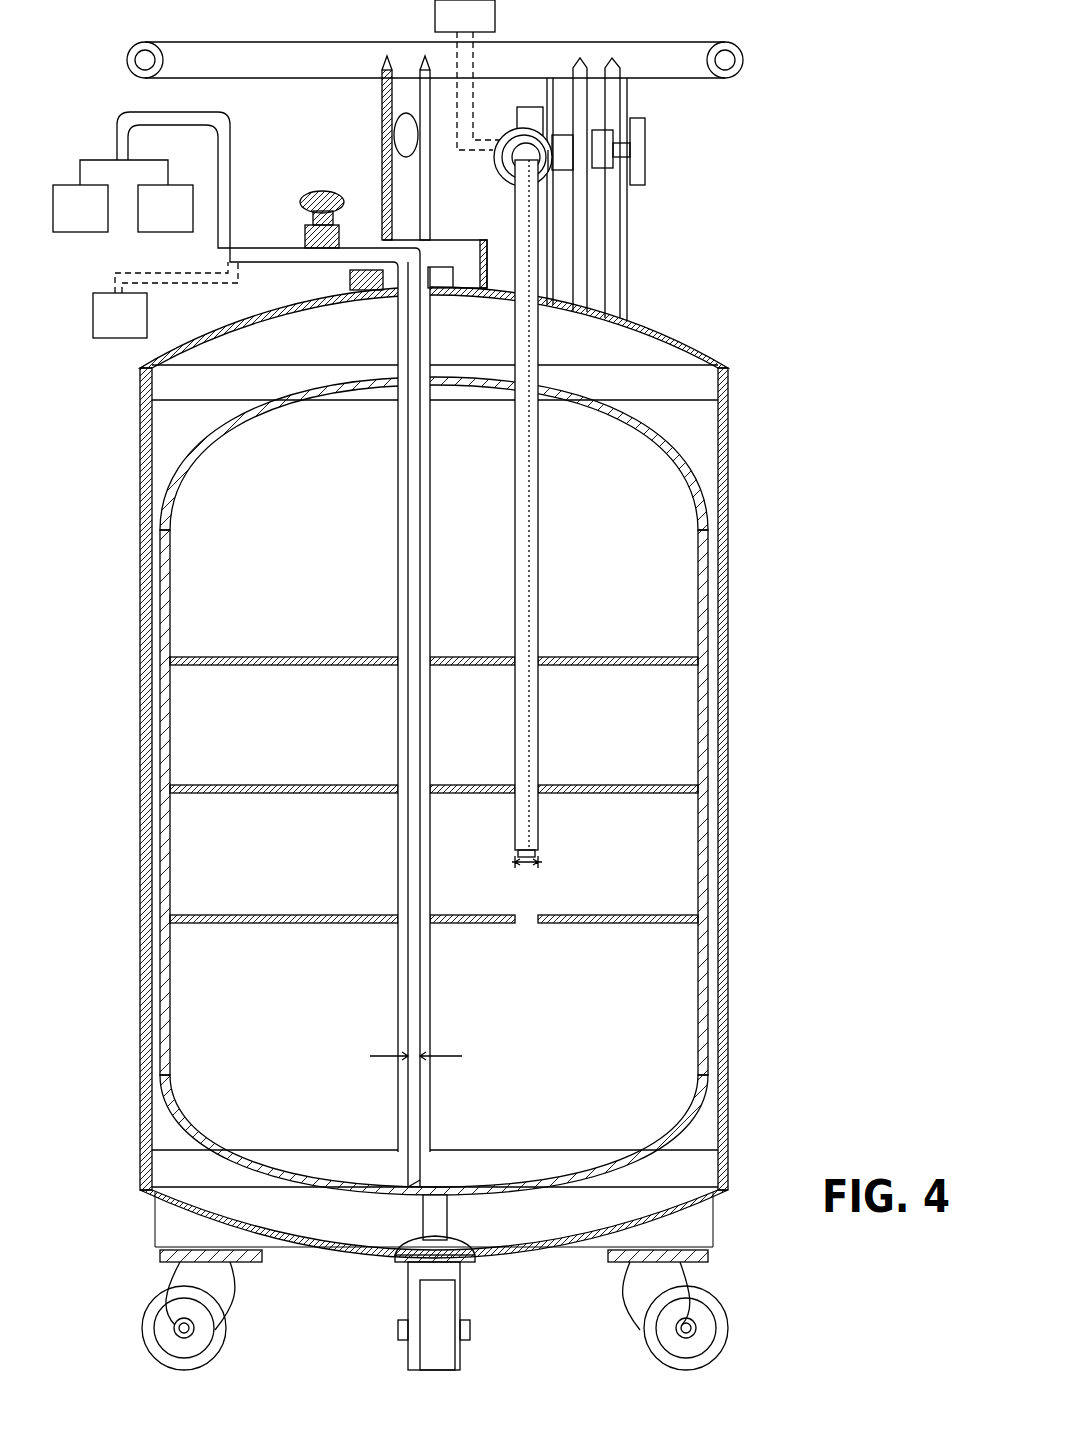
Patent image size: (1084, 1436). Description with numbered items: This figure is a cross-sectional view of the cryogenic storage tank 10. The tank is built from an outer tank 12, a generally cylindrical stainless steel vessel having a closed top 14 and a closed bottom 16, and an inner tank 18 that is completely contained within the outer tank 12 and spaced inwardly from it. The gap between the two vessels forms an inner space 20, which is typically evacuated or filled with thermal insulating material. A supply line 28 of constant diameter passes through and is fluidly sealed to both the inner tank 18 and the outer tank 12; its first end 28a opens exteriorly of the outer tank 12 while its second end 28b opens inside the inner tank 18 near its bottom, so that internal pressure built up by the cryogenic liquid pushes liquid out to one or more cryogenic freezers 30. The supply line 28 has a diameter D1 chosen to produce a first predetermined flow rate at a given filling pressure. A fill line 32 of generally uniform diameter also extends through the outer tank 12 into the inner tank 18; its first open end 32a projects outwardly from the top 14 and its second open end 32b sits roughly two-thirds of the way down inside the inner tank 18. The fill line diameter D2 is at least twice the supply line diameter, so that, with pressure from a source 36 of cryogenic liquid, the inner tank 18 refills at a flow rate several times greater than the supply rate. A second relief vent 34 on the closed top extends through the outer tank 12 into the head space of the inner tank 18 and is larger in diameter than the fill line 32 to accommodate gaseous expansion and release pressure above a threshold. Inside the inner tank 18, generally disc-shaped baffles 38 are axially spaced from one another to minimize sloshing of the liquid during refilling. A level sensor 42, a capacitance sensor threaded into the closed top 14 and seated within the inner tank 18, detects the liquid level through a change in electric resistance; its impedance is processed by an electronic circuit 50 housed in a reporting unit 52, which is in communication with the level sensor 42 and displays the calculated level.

The cryogenic storage tank 10 is at (727, 322).
The outer tank 12 is at (727, 436).
The closed top 14 is at (713, 337).
The closed bottom 16 is at (522, 1262).
The inner tank 18 is at (504, 786).
The inner space 20 is at (707, 477).
The supply line 28 is at (408, 720).
The first end 28a is at (380, 252).
The second end 28b is at (408, 1186).
The cryogenic freezer 30 is at (123, 196).
The fill line 32 is at (589, 430).
The first open end 32a is at (548, 160).
The second open end 32b is at (515, 852).
The second relief vent 34 is at (515, 128).
The source of cryogenic liquid 36 is at (296, 169).
The baffles 38 is at (647, 656).
The level sensor 42 is at (432, 735).
The electronic circuit 50 is at (358, 300).
The reporting unit 52 is at (366, 250).
The diameter of the supply line D1 is at (462, 1056).
The diameter of the fill line D2 is at (530, 866).